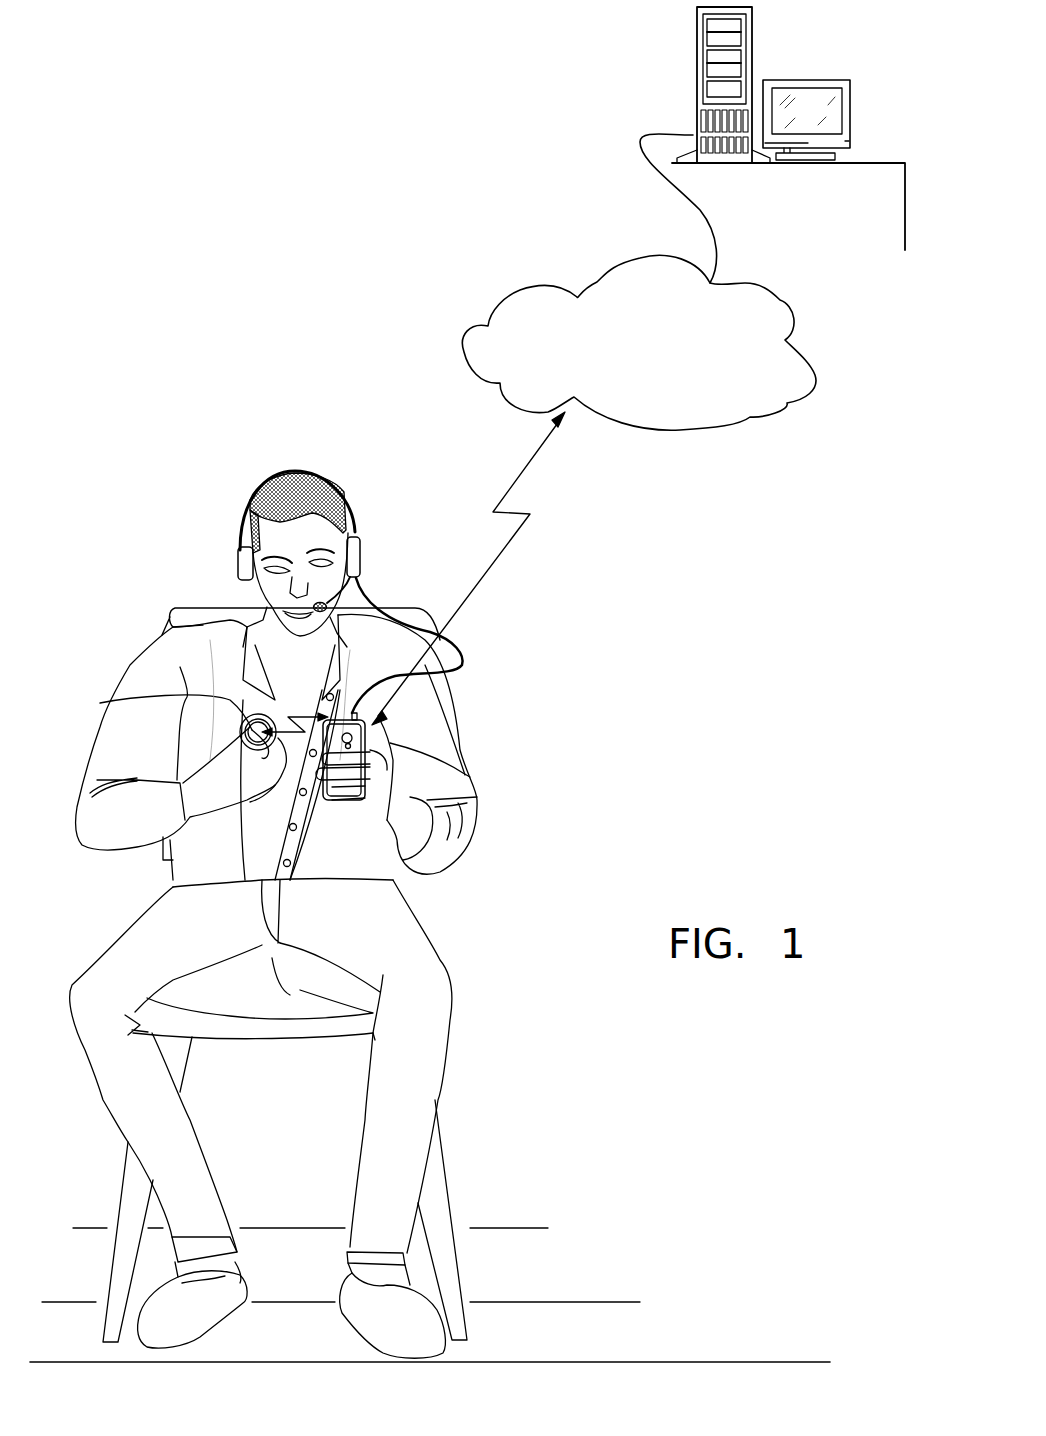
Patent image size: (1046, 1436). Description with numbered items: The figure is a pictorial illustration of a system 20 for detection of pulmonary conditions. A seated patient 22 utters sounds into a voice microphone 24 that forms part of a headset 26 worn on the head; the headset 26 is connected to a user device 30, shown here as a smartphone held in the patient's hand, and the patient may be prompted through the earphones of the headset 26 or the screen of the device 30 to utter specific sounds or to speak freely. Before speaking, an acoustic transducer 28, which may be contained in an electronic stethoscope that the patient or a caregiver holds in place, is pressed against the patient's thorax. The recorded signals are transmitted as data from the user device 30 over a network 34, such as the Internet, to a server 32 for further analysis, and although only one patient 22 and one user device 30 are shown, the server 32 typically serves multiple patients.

The system 20 is at (252, 301).
The patient 22 is at (170, 616).
The voice microphone 24 is at (332, 604).
The headset 26 is at (352, 545).
The acoustic transducer 28 is at (128, 700).
The user device 30 is at (357, 743).
The server 32 is at (696, 62).
The network 34 is at (502, 293).